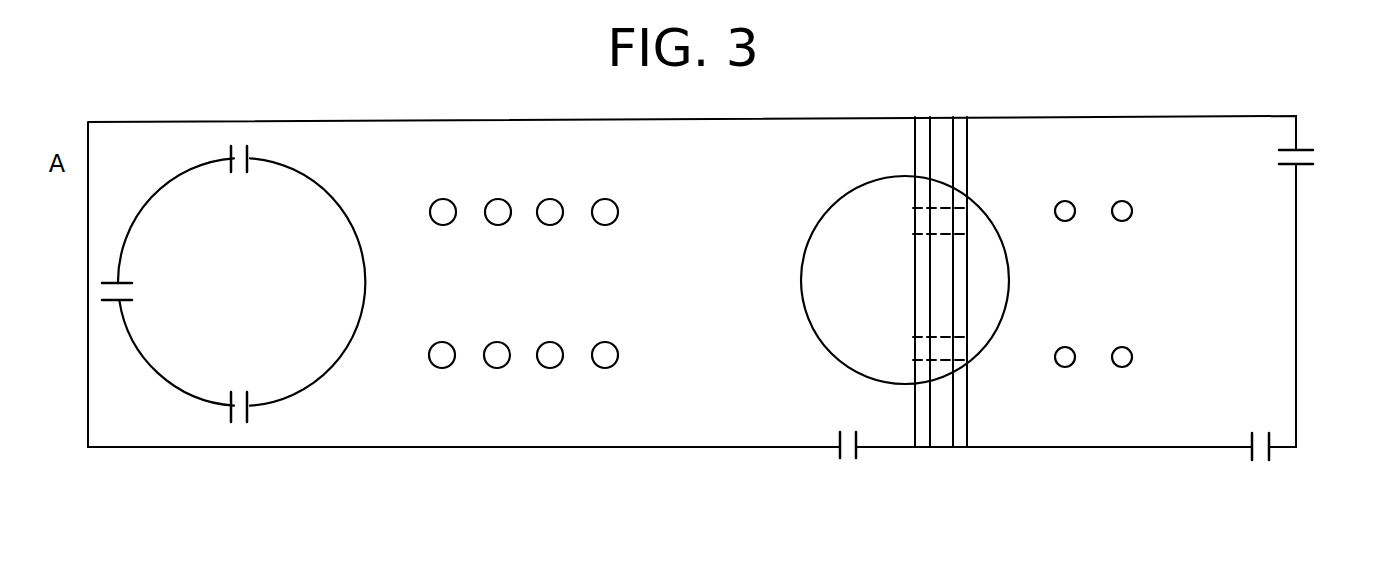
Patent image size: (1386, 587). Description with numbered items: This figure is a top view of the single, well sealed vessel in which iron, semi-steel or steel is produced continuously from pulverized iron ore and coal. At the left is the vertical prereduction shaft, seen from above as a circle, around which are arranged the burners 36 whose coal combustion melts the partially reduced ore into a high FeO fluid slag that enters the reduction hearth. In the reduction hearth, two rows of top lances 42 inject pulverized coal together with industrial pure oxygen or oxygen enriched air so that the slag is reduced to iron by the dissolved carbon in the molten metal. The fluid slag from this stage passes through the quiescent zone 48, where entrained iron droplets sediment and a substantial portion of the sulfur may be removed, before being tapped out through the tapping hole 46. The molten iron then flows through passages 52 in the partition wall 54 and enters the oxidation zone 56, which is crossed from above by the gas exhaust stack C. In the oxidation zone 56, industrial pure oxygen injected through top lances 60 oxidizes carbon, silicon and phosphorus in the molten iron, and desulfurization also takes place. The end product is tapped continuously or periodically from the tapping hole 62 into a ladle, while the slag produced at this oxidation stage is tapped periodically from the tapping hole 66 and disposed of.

The burners 36 is at (243, 146).
The top lances 42 is at (446, 210).
The tapping hole 46 is at (847, 458).
The quiescent zone 48 is at (685, 430).
The passages 52 is at (954, 224).
The partition wall 54 is at (940, 158).
The oxidation zone 56 is at (1280, 288).
The top lances 60 is at (1122, 210).
The tapping hole 62 is at (1312, 160).
The tapping hole 66 is at (1262, 455).
The gas exhaust stack C is at (830, 212).